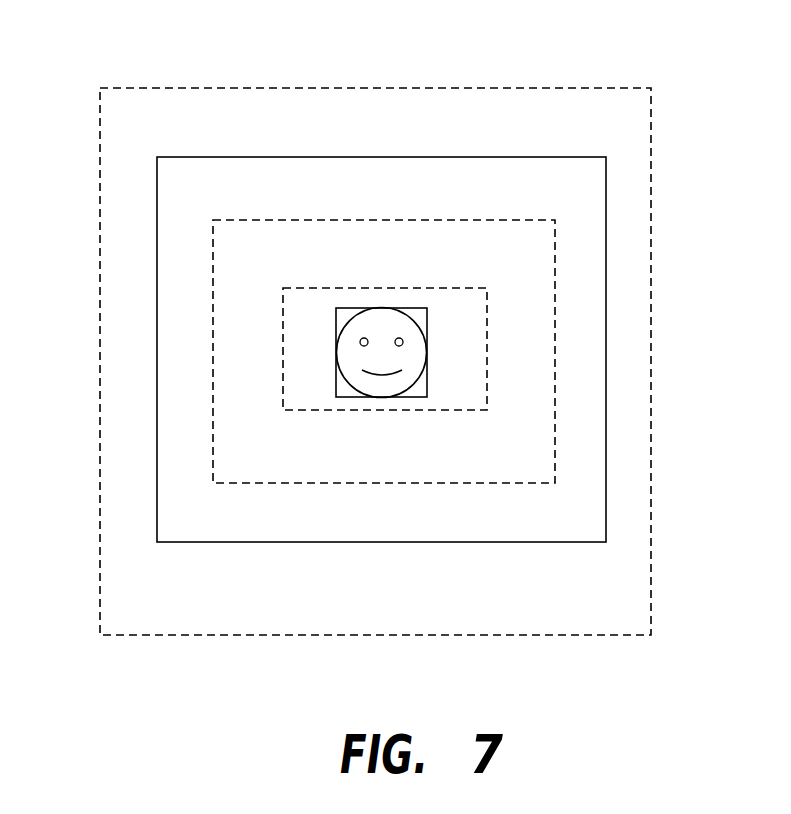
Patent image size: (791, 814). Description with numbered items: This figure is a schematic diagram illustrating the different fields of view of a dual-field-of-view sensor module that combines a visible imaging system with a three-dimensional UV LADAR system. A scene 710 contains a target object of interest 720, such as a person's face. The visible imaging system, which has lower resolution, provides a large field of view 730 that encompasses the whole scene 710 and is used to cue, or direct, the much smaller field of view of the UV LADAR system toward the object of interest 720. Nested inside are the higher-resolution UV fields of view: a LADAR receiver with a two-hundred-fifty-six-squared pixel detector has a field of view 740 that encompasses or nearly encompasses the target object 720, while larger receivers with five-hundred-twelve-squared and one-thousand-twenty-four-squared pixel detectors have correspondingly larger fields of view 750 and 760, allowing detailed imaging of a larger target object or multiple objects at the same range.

The scene 710 is at (606, 217).
The target object of interest 720 is at (412, 388).
The visible field of view 730 is at (601, 87).
The field of view of 256-squared pixel receiver 740 is at (335, 387).
The field of view of 512-squared pixel receiver 750 is at (488, 390).
The field of view of 1024-squared pixel receiver 760 is at (555, 298).